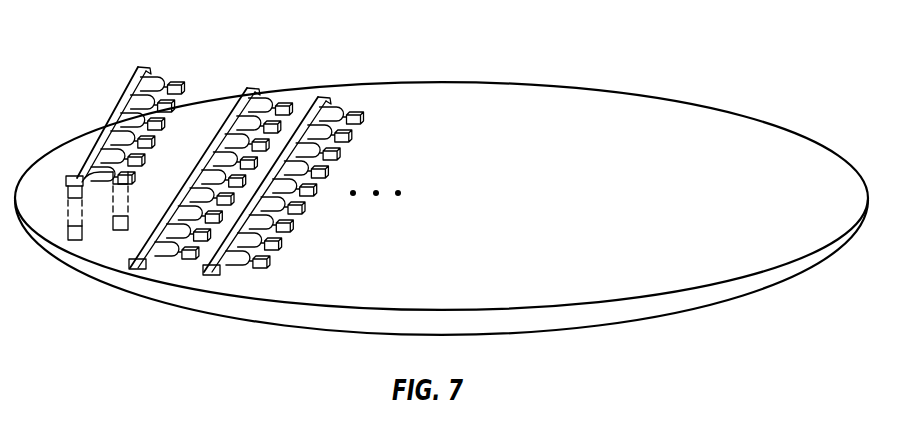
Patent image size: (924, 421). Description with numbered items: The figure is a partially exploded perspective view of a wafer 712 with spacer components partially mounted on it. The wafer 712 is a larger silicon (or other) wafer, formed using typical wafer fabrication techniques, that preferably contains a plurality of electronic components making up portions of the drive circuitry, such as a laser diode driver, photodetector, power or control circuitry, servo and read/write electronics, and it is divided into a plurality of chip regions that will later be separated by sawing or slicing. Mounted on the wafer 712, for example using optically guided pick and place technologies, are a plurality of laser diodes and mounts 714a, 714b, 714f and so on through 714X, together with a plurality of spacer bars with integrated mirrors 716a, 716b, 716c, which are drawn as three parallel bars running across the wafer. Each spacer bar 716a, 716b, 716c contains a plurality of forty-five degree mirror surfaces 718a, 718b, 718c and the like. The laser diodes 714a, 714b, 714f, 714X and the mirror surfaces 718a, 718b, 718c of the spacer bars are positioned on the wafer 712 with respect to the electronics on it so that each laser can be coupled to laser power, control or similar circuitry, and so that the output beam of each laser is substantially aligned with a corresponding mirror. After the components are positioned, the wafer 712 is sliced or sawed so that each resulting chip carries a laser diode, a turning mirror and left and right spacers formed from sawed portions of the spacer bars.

The wafer 712 is at (545, 97).
The laser diode and mount 714a is at (127, 172).
The laser diode and mount 714b is at (140, 158).
The laser diode and mount 714f is at (172, 83).
The laser diode and mount 714X is at (365, 108).
The spacer bar with integrated mirrors 716a is at (138, 67).
The spacer bar with integrated mirrors 716b is at (133, 272).
The spacer bar with integrated mirrors 716c is at (208, 277).
The mirror surface 718a is at (110, 172).
The mirror surface 718b is at (115, 153).
The mirror surface 718c is at (132, 155).